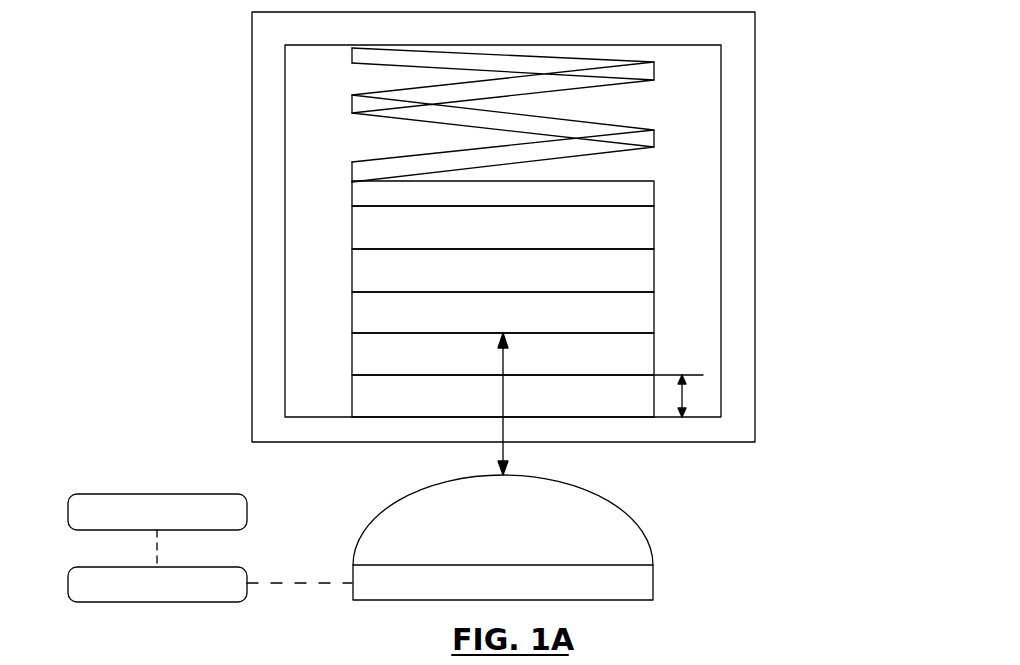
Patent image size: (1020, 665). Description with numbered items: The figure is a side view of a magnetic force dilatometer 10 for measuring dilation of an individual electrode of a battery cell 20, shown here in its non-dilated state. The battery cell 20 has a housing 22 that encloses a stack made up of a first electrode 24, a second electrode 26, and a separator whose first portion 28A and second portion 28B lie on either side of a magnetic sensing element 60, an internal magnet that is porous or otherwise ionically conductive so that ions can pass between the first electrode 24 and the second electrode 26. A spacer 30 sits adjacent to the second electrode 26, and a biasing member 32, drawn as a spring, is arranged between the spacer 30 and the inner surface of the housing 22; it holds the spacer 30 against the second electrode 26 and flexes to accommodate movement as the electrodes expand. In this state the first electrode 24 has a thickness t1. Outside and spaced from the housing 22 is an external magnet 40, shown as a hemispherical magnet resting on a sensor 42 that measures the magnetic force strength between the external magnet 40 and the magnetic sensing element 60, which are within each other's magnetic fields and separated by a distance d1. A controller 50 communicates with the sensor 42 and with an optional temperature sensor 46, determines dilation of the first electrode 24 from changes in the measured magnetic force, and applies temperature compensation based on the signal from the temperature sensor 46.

The magnetic force dilatometer 10 is at (183, 75).
The battery cell 20 is at (755, 63).
The housing 22 is at (734, 134).
The first electrode 24 is at (352, 395).
The second electrode 26 is at (352, 230).
The first portion of separator 28A is at (352, 355).
The second portion of separator 28B is at (352, 273).
The spacer 30 is at (352, 194).
The biasing member 32 is at (352, 112).
The external magnet 40 is at (621, 547).
The sensor 42 is at (636, 586).
The temperature sensor 46 is at (223, 494).
The controller 50 is at (223, 567).
The magnetic sensing element 60 is at (352, 315).
The thickness of first electrode t1 is at (679, 396).
The distance d1 is at (506, 463).